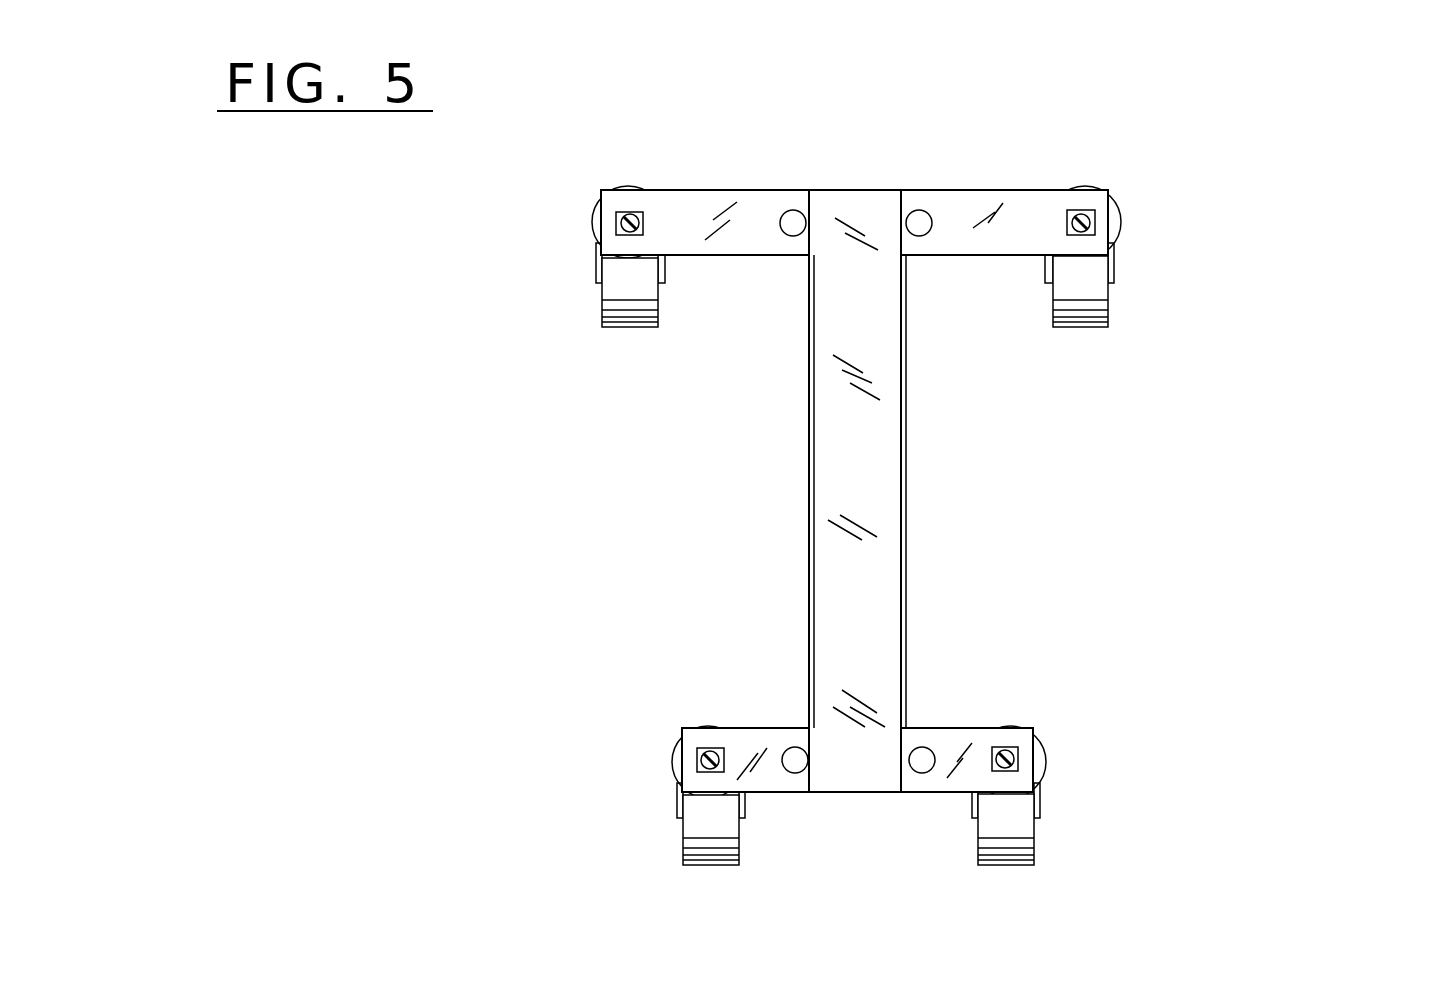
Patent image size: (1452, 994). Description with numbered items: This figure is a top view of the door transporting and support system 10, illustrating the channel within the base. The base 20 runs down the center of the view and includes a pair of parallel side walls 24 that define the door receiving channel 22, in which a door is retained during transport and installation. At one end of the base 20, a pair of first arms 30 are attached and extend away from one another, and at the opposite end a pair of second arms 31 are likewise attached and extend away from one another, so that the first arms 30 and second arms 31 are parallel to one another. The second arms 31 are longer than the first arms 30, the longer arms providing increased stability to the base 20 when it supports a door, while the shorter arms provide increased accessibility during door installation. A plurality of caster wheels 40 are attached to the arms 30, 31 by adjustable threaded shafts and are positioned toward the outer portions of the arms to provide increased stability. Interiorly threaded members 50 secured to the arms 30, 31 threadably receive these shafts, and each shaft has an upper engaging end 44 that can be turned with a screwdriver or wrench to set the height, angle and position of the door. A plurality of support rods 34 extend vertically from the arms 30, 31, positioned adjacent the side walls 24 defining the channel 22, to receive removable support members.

The door transporting and support system 10 is at (1265, 142).
The base 20 is at (905, 518).
The channel 22 is at (833, 493).
The side walls 24 is at (812, 422).
The first arms 30 is at (762, 785).
The second arms 31 is at (747, 220).
The support rods 34 is at (795, 220).
The caster wheels 40 is at (617, 293).
The upper engaging end 44 is at (616, 218).
The threaded members 50 is at (641, 213).